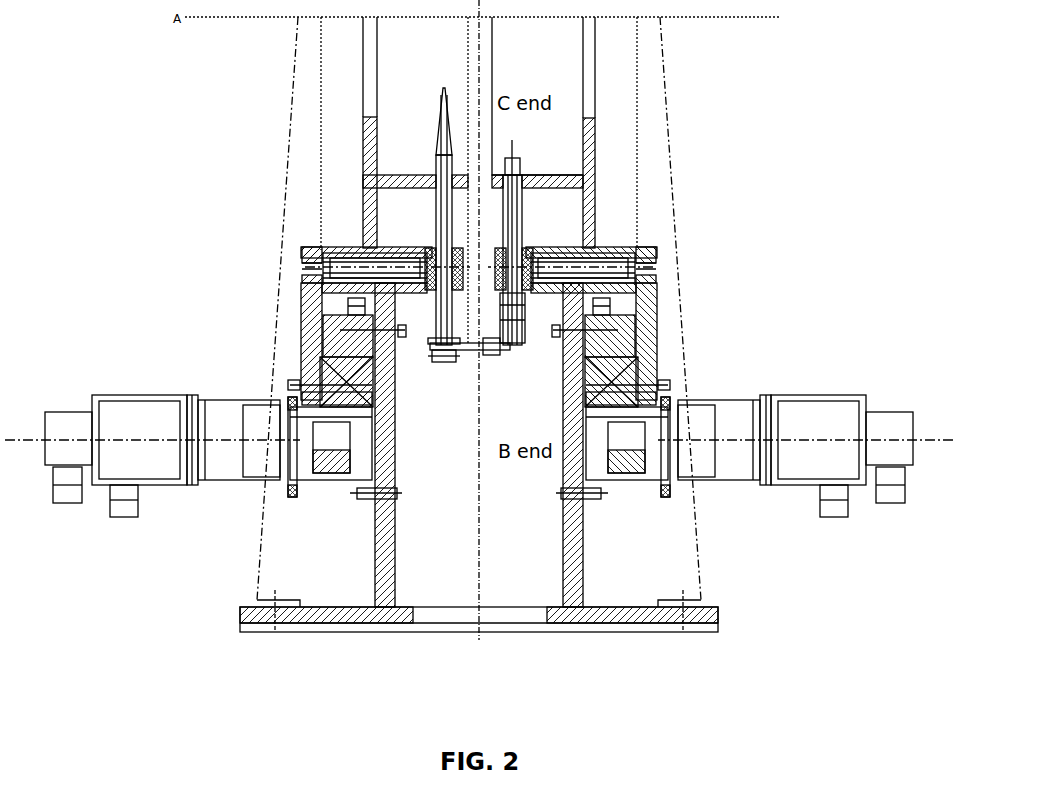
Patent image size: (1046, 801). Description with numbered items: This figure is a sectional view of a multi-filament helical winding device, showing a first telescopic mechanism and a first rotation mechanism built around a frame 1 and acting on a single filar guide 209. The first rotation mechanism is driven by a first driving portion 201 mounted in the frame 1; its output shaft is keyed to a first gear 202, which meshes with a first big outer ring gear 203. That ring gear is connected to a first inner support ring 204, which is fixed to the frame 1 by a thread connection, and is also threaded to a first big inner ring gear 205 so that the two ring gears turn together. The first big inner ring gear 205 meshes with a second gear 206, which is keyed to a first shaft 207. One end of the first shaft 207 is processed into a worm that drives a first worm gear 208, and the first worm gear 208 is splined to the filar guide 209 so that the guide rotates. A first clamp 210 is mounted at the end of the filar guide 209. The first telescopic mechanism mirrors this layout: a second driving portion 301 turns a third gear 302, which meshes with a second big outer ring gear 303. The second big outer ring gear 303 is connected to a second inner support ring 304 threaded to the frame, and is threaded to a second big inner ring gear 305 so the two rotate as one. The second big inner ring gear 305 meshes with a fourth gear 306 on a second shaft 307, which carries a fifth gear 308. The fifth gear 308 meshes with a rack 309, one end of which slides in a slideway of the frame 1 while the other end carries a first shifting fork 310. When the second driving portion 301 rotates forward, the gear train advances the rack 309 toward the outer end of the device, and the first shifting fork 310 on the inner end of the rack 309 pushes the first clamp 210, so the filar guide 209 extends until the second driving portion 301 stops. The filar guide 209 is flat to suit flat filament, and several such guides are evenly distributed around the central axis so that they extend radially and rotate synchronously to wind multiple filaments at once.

The frame 1 is at (305, 548).
The first driving portion 201 is at (225, 450).
The first gear 202 is at (295, 402).
The first big outer ring gear 203 is at (297, 360).
The first inner support ring 204 is at (297, 310).
The first big inner ring gear 205 is at (300, 325).
The second gear 206 is at (322, 265).
The first shaft 207 is at (362, 250).
The first worm gear 208 is at (372, 245).
The filar guide 209 is at (442, 210).
The first clamp 210 is at (463, 362).
The second driving portion 301 is at (740, 455).
The third gear 302 is at (670, 400).
The second big outer ring gear 303 is at (660, 370).
The second inner support ring 304 is at (657, 328).
The second big inner ring gear 305 is at (657, 290).
The fourth gear 306 is at (652, 250).
The second shaft 307 is at (640, 245).
The fifth gear 308 is at (597, 218).
The rack 309 is at (525, 205).
The first shifting fork 310 is at (505, 362).